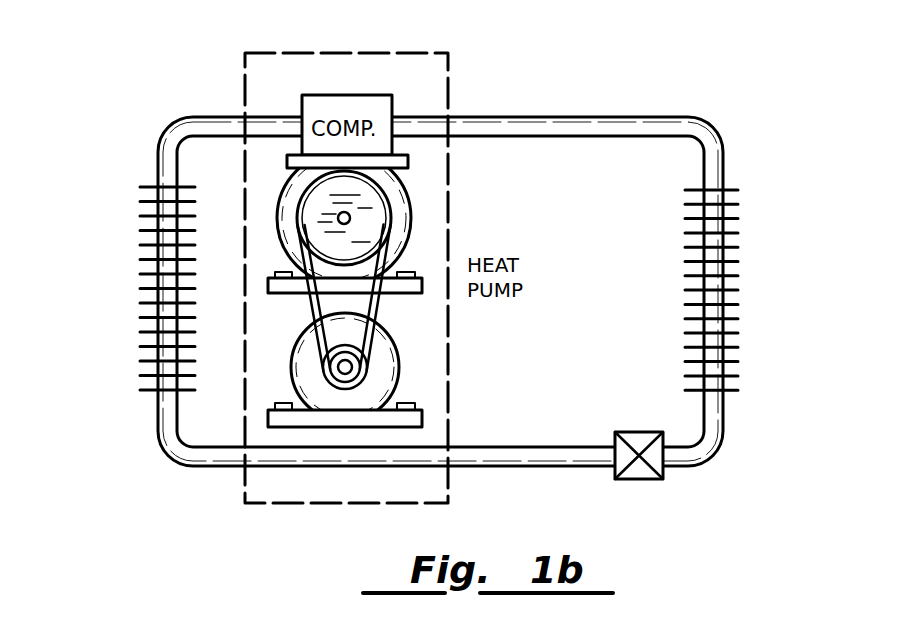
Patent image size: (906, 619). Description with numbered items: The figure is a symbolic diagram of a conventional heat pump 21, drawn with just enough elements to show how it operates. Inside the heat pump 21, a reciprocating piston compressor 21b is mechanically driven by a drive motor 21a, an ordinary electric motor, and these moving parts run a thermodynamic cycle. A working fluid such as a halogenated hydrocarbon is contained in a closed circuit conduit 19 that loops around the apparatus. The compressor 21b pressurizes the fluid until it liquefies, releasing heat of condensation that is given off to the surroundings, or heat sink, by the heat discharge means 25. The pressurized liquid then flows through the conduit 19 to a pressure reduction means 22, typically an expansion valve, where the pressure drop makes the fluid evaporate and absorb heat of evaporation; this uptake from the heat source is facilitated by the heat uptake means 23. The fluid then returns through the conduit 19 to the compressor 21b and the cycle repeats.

The closed circuit conduit 19 is at (499, 445).
The heat pump 21 is at (343, 505).
The drive motor 21a is at (398, 356).
The reciprocating piston compressor 21b is at (411, 188).
The pressure reduction means 22 is at (638, 482).
The heat uptake means 23 is at (733, 246).
The heat discharge means 25 is at (148, 245).